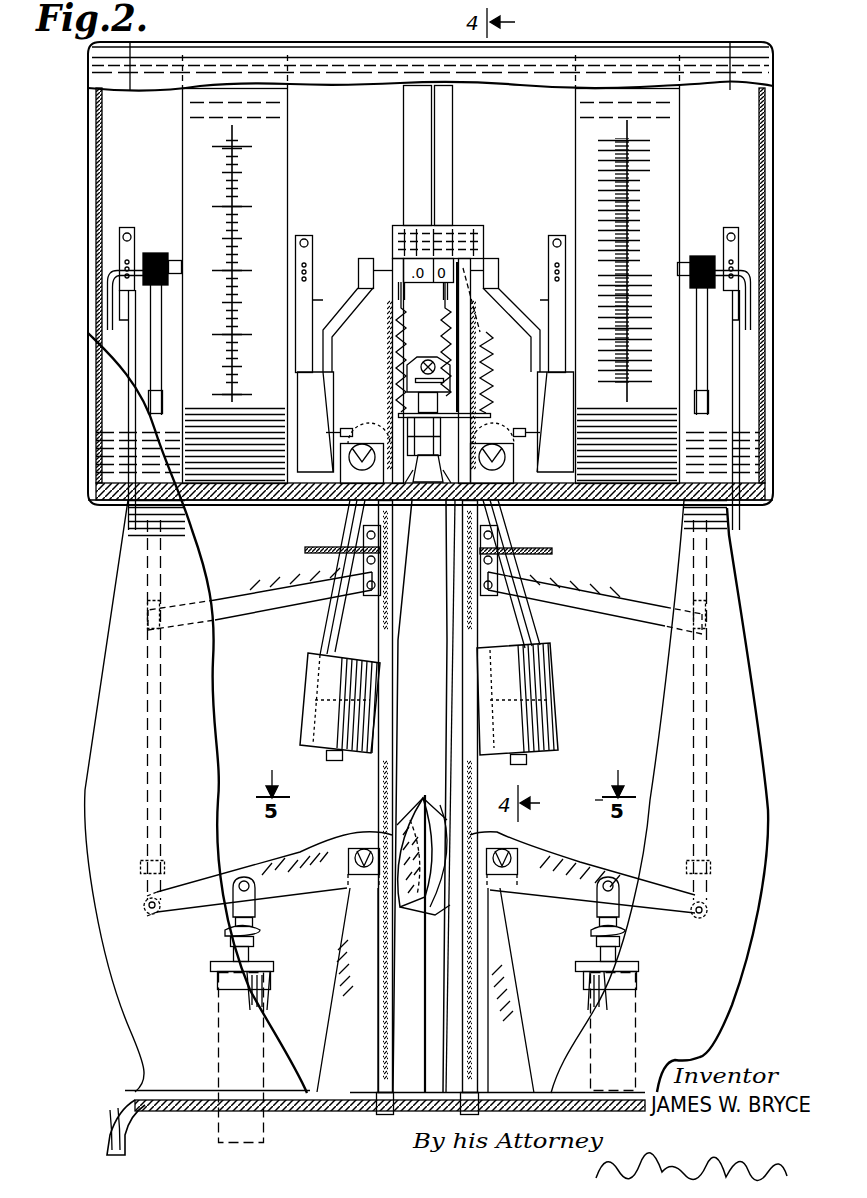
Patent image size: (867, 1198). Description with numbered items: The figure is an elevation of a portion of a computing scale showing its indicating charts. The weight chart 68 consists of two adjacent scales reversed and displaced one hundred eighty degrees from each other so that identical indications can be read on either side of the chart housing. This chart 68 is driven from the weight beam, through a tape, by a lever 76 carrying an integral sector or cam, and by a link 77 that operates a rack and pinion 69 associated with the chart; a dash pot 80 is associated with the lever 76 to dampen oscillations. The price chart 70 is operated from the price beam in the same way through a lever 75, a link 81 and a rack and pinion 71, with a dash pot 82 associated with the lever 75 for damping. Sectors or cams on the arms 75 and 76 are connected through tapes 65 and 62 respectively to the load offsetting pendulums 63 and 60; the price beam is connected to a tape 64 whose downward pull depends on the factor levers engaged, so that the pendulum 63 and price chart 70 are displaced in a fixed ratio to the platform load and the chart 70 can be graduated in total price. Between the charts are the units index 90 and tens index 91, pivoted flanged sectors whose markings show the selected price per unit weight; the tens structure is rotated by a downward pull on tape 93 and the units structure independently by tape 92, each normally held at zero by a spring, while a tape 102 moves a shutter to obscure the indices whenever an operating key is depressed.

The load offsetting pendulum 60 is at (512, 692).
The tape 62 is at (420, 796).
The load offsetting pendulum 63 is at (332, 690).
The tape 64 is at (423, 995).
The tape 65 is at (436, 796).
The weight chart 68 is at (190, 127).
The rack and pinion 69 is at (175, 262).
The price chart 70 is at (675, 183).
The rack and pinion 71 is at (705, 275).
The lever 75 is at (556, 890).
The lever 76 is at (292, 866).
The link 77 is at (156, 693).
The dash pot 80 is at (270, 998).
The link 81 is at (705, 800).
The dash pot 82 is at (588, 988).
The units index 90 is at (452, 178).
The tens index 91 is at (404, 175).
The tape 92 is at (480, 338).
The tape 93 is at (390, 322).
The tape 102 is at (455, 537).